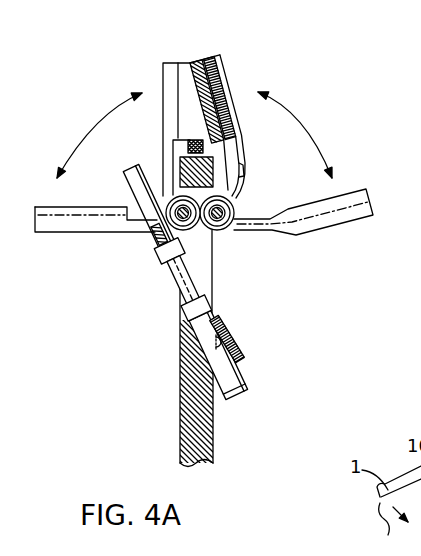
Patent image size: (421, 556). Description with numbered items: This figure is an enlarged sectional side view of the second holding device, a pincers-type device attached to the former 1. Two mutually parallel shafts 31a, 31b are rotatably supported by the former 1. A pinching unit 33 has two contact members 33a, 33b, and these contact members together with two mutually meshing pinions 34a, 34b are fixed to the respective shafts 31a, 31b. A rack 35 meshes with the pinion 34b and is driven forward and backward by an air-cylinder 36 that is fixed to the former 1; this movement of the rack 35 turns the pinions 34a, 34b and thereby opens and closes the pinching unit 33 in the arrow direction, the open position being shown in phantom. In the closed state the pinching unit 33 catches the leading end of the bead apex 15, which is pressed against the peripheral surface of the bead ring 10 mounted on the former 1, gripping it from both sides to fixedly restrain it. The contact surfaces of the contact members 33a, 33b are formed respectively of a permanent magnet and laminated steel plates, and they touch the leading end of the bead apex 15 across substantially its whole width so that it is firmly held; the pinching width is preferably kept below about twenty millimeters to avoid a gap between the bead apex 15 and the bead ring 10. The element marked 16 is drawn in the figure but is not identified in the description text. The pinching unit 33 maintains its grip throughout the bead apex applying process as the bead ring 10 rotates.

The former 1 is at (179, 409).
The bead ring 10 is at (188, 146).
The bead apex 15 is at (188, 110).
The engaging block 16 is at (236, 167).
The shaft 31a is at (230, 237).
The shaft 31b is at (160, 239).
The pinching unit 33 is at (227, 69).
The contact member 33a is at (192, 62).
The contact member 33b is at (161, 63).
The pinion 34a is at (233, 213).
The pinion 34b is at (202, 232).
The rack 35 is at (142, 187).
The air-cylinder 36 is at (234, 382).